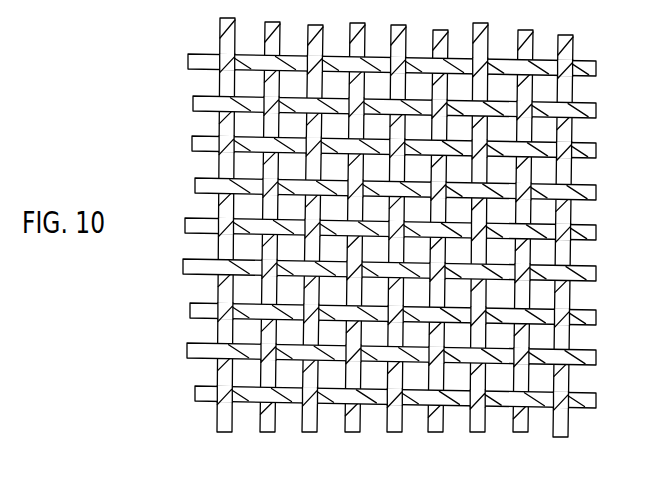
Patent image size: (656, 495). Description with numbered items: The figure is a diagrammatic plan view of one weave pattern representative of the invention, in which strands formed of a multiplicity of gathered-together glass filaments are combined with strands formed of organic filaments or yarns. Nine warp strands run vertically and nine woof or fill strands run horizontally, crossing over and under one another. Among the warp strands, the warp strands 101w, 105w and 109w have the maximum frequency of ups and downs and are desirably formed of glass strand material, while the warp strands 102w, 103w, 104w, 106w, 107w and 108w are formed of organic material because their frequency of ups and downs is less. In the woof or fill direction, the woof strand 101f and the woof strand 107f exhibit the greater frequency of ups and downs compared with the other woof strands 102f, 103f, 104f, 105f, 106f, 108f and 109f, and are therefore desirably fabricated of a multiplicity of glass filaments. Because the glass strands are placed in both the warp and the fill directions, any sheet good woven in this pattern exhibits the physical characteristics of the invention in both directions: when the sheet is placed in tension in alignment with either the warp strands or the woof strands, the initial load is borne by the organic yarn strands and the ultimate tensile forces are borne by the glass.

The warp strand 101w is at (225, 432).
The warp strand 102w is at (268, 432).
The warp strand 103w is at (310, 432).
The warp strand 104w is at (353, 432).
The warp strand 105w is at (395, 432).
The warp strand 106w is at (436, 432).
The warp strand 107w is at (478, 432).
The warp strand 108w is at (521, 432).
The warp strand 109w is at (561, 437).
The woof strand 101f is at (187, 61).
The woof strand 102f is at (192, 103).
The woof strand 103f is at (191, 143).
The woof strand 104f is at (194, 185).
The woof strand 105f is at (184, 225).
The woof strand 106f is at (182, 266).
The woof strand 107f is at (189, 310).
The woof strand 108f is at (186, 350).
The woof strand 109f is at (194, 393).